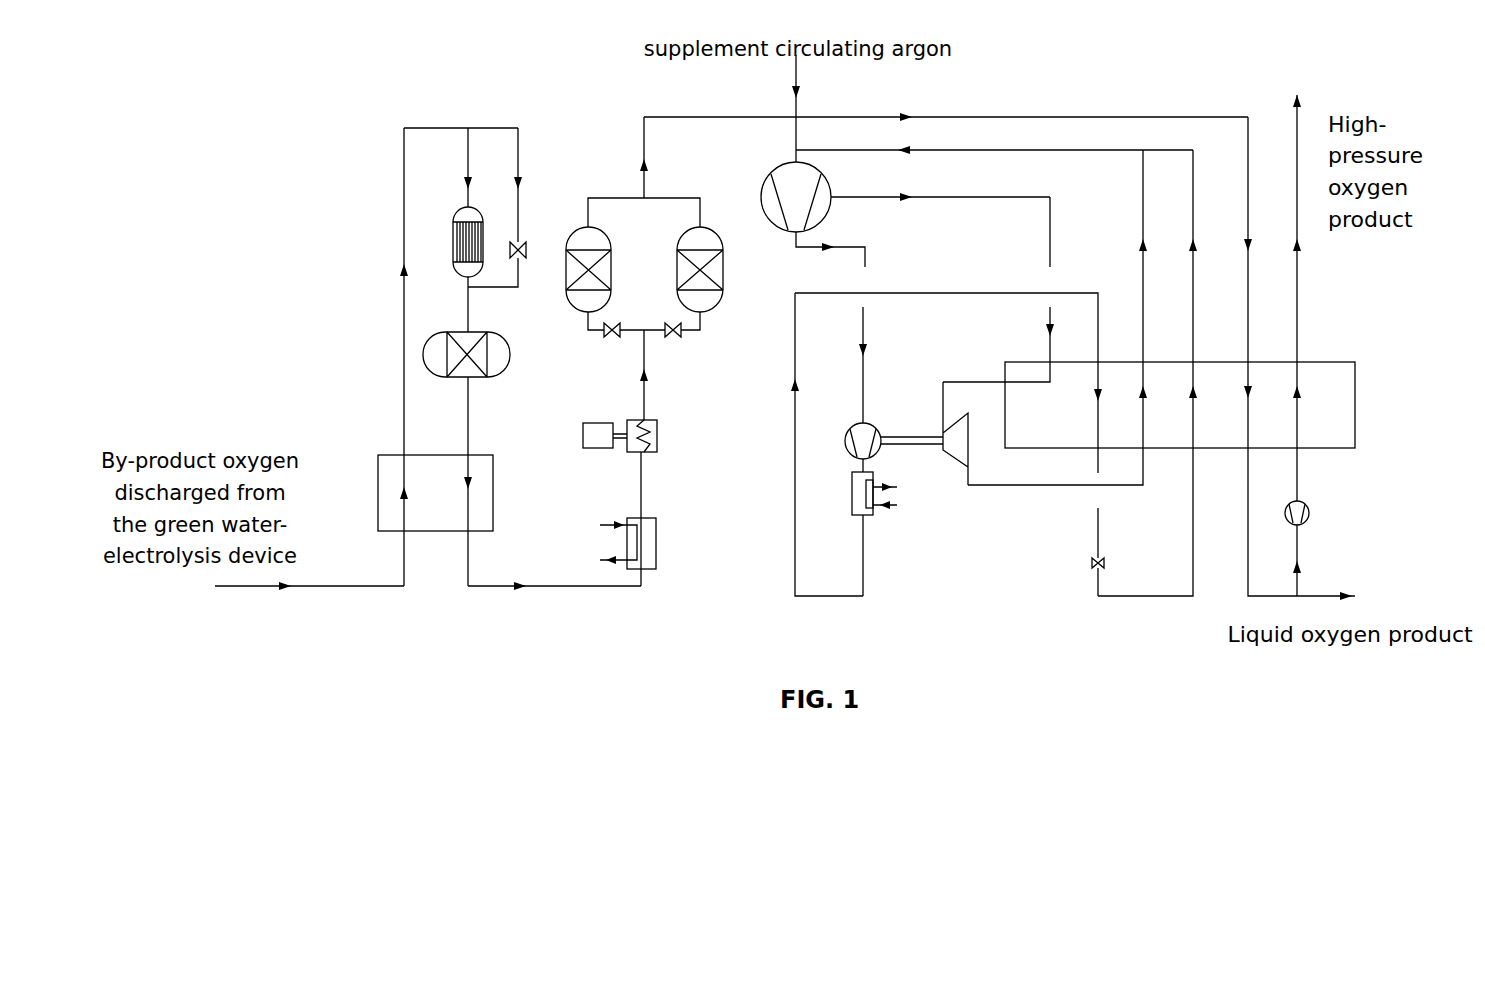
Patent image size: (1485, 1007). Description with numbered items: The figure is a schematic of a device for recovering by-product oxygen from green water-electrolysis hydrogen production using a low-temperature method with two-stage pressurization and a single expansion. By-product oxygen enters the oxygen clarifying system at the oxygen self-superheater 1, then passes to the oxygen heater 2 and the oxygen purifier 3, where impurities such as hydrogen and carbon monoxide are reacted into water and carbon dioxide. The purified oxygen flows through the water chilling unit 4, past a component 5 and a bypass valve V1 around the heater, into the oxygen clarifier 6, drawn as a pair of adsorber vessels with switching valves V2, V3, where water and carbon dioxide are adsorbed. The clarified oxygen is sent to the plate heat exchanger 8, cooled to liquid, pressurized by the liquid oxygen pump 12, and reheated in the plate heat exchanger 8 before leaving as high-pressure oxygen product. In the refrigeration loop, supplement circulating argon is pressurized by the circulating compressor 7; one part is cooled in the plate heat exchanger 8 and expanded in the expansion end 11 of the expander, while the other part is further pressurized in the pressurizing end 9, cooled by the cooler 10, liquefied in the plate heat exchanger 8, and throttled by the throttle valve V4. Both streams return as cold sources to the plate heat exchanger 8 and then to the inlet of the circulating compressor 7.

The oxygen self-superheater 1 is at (378, 485).
The oxygen heater 2 is at (453, 240).
The oxygen purifier 3 is at (502, 372).
The water chilling unit 4 is at (657, 548).
The heater 5 is at (657, 443).
The oxygen clarifier 6 is at (700, 228).
The circulating compressor 7 is at (762, 190).
The plate heat exchanger 8 is at (1005, 370).
The pressurizing end of the expander 9 is at (846, 438).
The cooler 10 is at (852, 492).
The expansion end of the expander 11 is at (968, 457).
The liquid oxygen pump 12 is at (1307, 518).
The valve V1 is at (520, 245).
The valve V2 is at (677, 336).
The valve V3 is at (609, 336).
The throttle valve V4 is at (1093, 558).